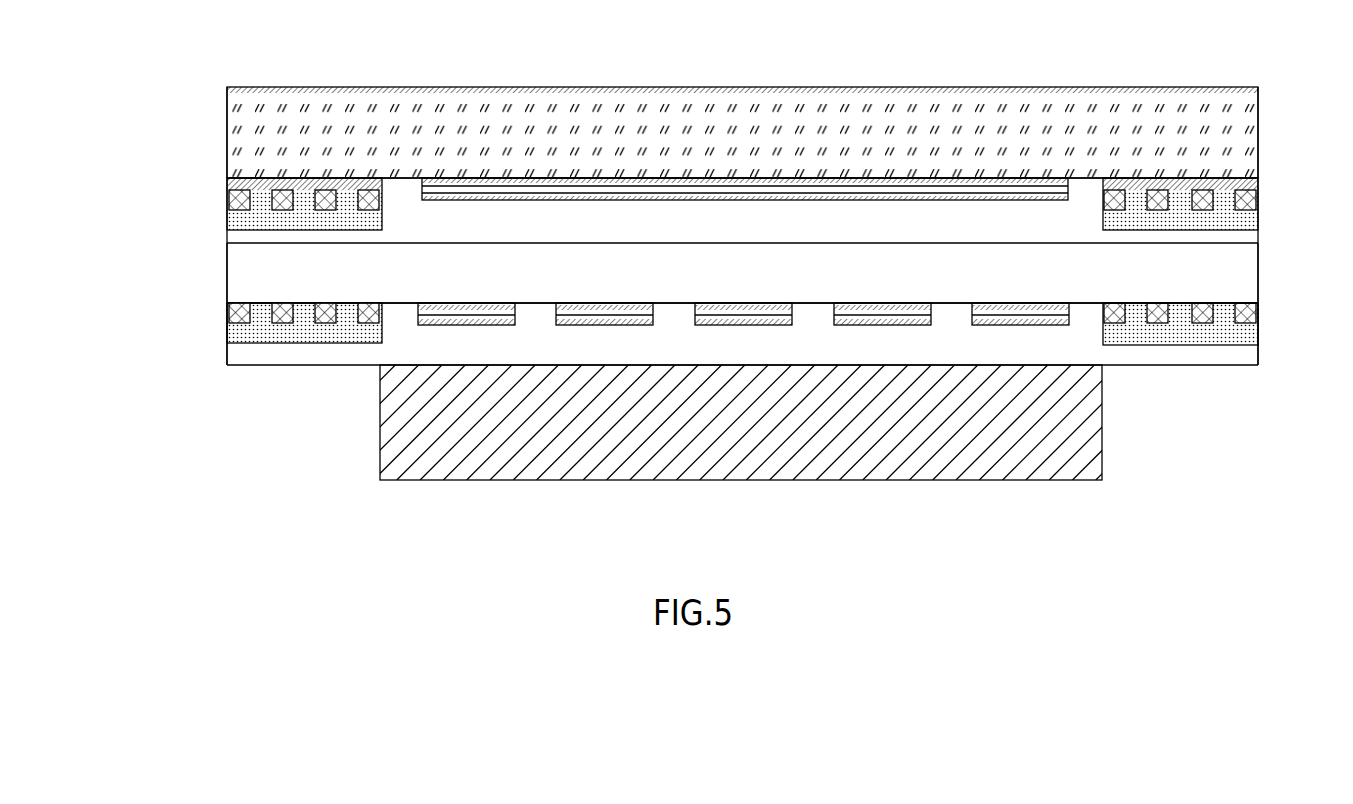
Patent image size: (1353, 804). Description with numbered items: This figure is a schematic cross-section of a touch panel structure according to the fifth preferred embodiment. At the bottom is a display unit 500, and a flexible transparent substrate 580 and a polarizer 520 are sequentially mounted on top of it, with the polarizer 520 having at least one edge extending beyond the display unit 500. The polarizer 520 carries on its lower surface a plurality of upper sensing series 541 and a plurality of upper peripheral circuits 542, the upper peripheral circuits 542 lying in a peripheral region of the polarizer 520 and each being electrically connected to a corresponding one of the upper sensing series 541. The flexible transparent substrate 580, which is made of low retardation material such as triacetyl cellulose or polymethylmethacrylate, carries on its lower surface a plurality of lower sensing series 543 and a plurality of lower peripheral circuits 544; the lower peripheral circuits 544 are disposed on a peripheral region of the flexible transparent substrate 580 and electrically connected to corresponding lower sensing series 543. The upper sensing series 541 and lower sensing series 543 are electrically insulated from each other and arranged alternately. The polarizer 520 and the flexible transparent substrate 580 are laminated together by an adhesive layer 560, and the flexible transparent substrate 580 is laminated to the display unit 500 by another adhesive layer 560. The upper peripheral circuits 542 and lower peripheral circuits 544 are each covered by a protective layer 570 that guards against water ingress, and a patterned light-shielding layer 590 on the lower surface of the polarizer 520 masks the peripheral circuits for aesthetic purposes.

The display unit 500 is at (650, 432).
The polarizer 520 is at (623, 132).
The upper sensing series 541 is at (458, 186).
The upper peripheral circuits 542 is at (320, 184).
The lower sensing series 543 is at (442, 314).
The lower peripheral circuits 544 is at (320, 312).
The adhesive layer 560 is at (800, 340).
The protective layer 570 is at (1152, 328).
The flexible transparent substrate 580 is at (471, 283).
The patterned light-shielding layer 590 is at (1175, 182).